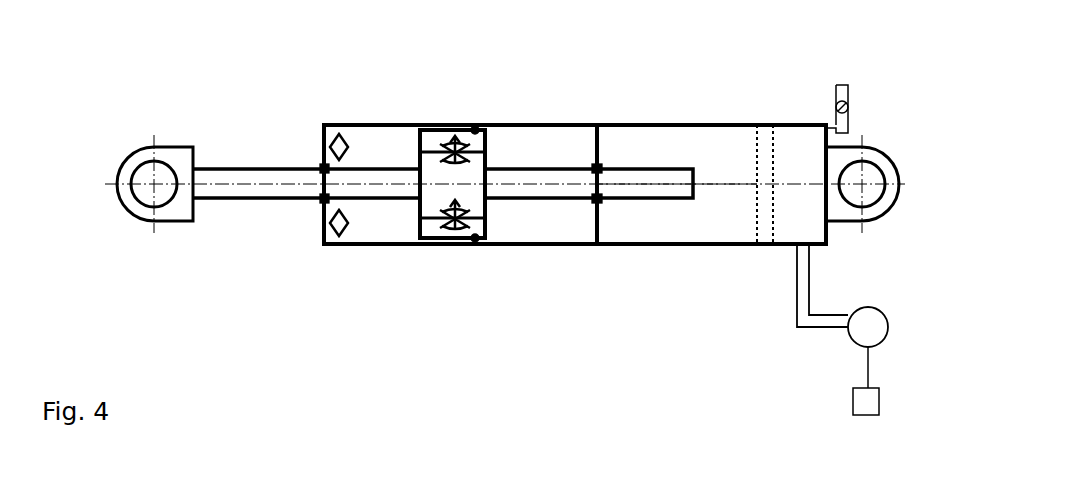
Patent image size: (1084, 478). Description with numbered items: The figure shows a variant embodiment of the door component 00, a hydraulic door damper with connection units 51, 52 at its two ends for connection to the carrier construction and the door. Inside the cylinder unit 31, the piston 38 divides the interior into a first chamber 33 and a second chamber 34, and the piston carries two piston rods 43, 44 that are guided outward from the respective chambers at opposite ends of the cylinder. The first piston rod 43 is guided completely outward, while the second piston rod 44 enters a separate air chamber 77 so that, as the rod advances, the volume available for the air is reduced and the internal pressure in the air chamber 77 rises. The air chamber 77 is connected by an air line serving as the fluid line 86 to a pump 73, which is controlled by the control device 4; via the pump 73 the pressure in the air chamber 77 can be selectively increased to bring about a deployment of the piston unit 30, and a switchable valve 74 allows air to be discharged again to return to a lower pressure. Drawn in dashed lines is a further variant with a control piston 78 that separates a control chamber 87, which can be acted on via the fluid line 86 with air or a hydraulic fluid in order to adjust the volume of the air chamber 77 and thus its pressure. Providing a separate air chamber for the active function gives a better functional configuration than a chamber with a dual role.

The hydraulic cylinder unit 00 is at (345, 76).
The piston unit 30 is at (474, 127).
The cylinder unit 31 is at (572, 122).
The first chamber 33 is at (368, 223).
The second chamber 34 is at (545, 225).
The piston 38 is at (433, 229).
The first piston rod 43 is at (274, 192).
The second piston rod 44 is at (648, 180).
The connection unit 51 is at (141, 162).
The connection unit 52 is at (867, 160).
The pump 73 is at (868, 315).
The switchable valve 74 is at (836, 105).
The air chamber 77 is at (712, 223).
The control piston 78 is at (765, 125).
The fluid line 86 is at (811, 318).
The control chamber 87 is at (792, 223).
The control device 4 is at (871, 405).